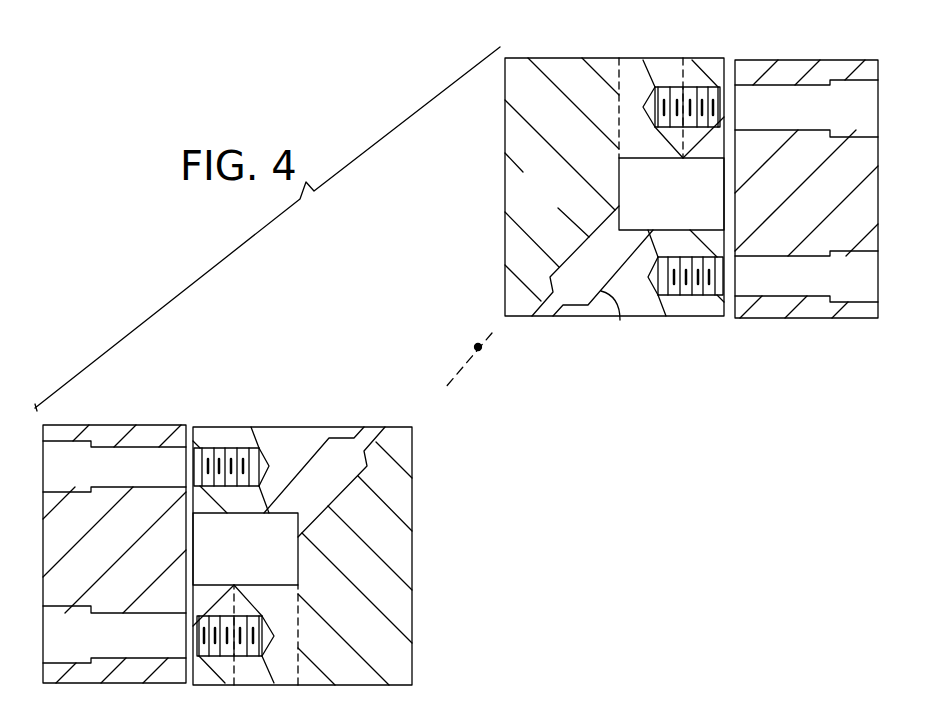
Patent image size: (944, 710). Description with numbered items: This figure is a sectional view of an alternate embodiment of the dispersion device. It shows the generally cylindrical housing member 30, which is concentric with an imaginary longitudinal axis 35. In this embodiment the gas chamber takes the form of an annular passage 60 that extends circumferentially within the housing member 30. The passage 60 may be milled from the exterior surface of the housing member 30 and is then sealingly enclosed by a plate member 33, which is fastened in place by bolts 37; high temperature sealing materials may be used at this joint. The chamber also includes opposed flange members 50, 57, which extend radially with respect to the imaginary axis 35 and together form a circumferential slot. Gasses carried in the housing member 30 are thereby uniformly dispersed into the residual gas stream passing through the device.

The housing member 30 is at (600, 73).
The plate member 33 is at (817, 78).
The imaginary longitudinal axis 35 is at (478, 347).
The bolts 37 is at (687, 97).
The flange member 50 is at (597, 222).
The flange member 57 is at (622, 320).
The annular passage 60 is at (645, 199).